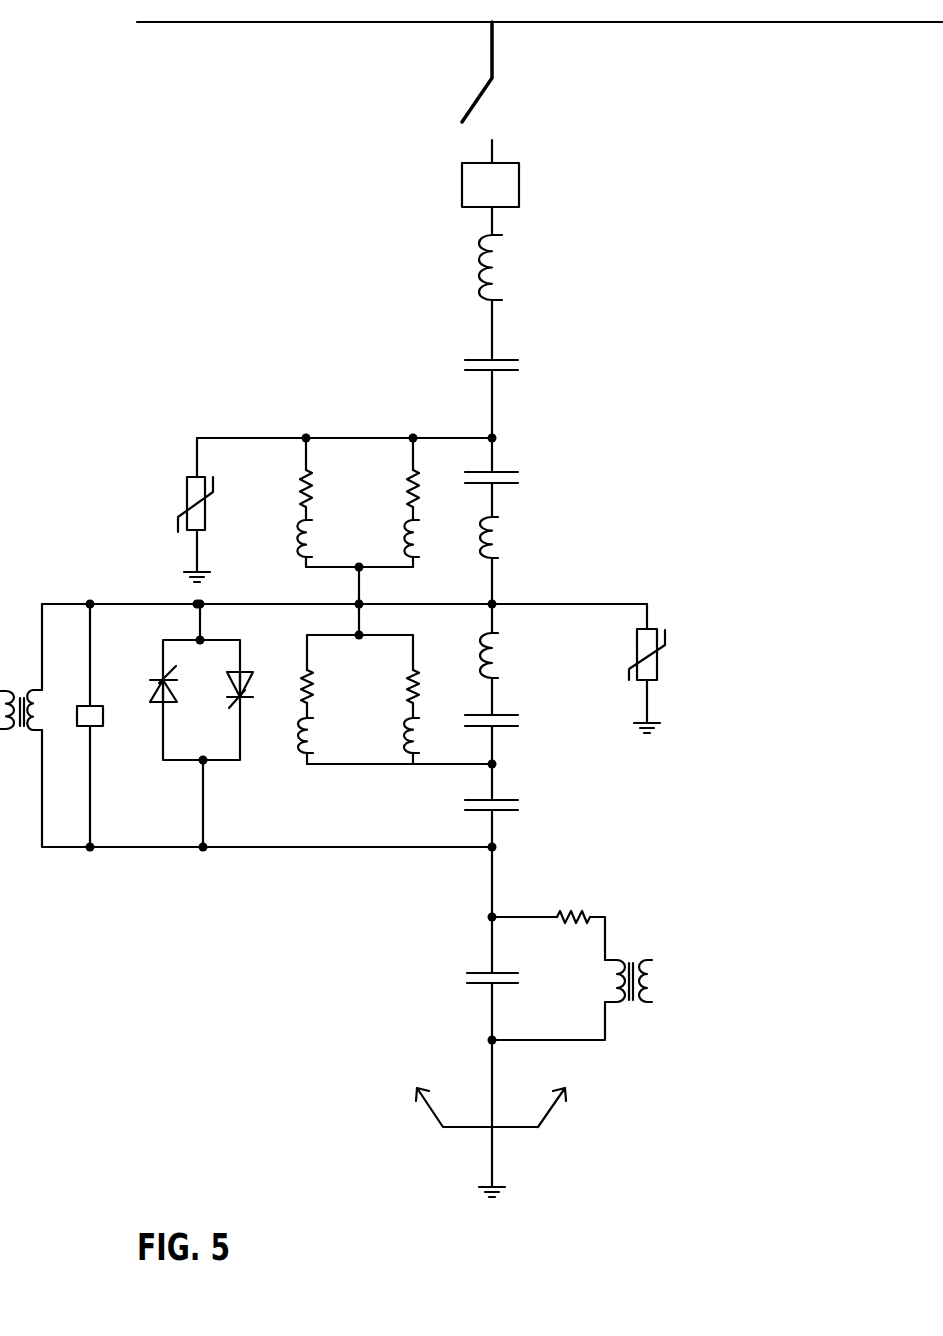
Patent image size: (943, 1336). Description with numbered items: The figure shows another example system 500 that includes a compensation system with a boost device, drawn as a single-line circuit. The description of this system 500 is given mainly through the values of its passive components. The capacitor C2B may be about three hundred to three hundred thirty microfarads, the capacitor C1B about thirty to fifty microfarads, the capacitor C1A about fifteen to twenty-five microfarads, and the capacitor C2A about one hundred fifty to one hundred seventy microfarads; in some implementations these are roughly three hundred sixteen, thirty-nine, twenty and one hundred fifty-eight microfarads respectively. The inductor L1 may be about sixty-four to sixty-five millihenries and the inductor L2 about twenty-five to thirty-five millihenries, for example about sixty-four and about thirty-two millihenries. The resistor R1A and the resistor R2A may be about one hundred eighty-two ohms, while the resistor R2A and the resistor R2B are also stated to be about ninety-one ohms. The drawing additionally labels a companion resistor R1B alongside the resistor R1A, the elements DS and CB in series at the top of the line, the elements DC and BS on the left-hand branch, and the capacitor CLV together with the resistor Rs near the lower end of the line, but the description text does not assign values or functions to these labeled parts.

The system 500 is at (471, 603).
The disconnect switch DS is at (495, 72).
The circuit breaker CB is at (506, 173).
The capacitor C1A is at (507, 364).
The capacitor C2A is at (509, 478).
The inductor L1 is at (495, 537).
The inductor L2 is at (496, 655).
The capacitor C2B is at (509, 719).
The capacitor C1B is at (509, 804).
The low voltage capacitor CLV is at (477, 978).
The resistor R1A is at (284, 502).
The resistor R1B is at (426, 502).
The resistor R2A is at (292, 699).
The resistor R2B is at (426, 699).
The DC source/transformer DC is at (32, 710).
The bypass switch BS is at (100, 725).
The resistor Rs is at (548, 927).